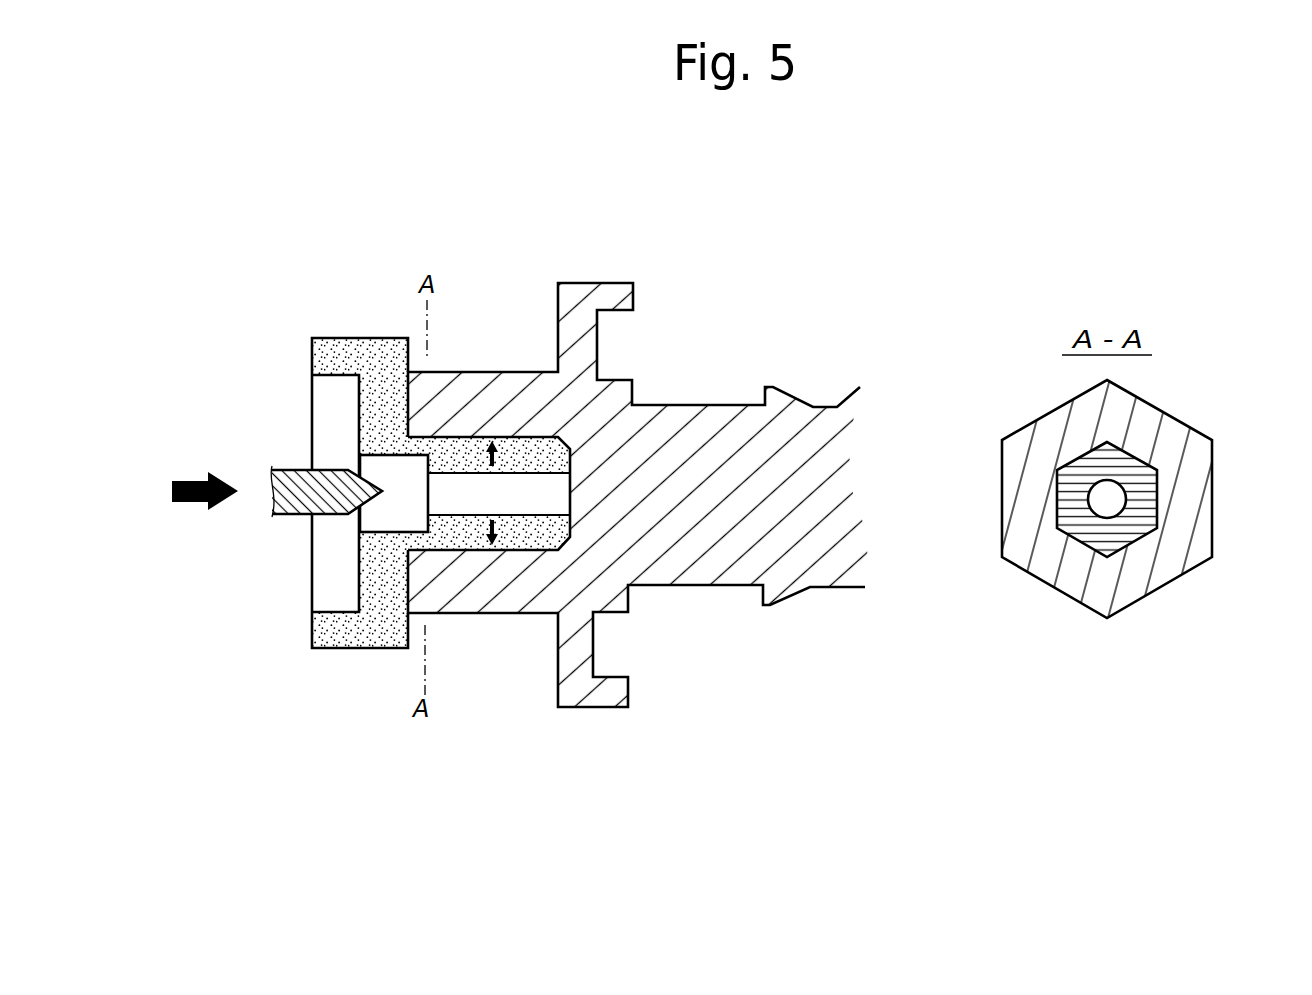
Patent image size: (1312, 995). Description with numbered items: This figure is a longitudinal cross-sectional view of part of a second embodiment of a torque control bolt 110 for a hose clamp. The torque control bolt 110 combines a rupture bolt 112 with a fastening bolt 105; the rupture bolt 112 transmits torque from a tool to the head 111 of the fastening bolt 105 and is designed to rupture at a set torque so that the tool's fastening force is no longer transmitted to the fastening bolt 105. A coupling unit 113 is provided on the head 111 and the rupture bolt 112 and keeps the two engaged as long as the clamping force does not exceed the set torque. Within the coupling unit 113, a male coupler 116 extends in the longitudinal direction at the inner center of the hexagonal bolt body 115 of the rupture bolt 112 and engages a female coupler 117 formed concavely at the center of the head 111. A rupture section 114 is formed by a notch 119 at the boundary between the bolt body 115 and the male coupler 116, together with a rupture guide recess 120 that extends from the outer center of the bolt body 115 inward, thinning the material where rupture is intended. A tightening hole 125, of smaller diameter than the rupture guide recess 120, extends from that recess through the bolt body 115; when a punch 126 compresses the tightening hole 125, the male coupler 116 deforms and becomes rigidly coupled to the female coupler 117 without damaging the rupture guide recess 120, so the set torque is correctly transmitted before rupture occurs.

The fastening bolt 105 is at (787, 622).
The torque control bolt 110 is at (250, 667).
The head 111 is at (520, 614).
The rupture bolt 112 is at (363, 652).
The coupling unit 113 is at (1112, 688).
The rupture section 114 is at (185, 580).
The bolt body 115 is at (325, 640).
The male coupler 116 is at (558, 530).
The female coupler 117 is at (566, 480).
The notch 119 is at (413, 548).
The rupture guide recess 120 is at (373, 520).
The tightening hole 125 is at (475, 498).
The punch 126 is at (293, 475).